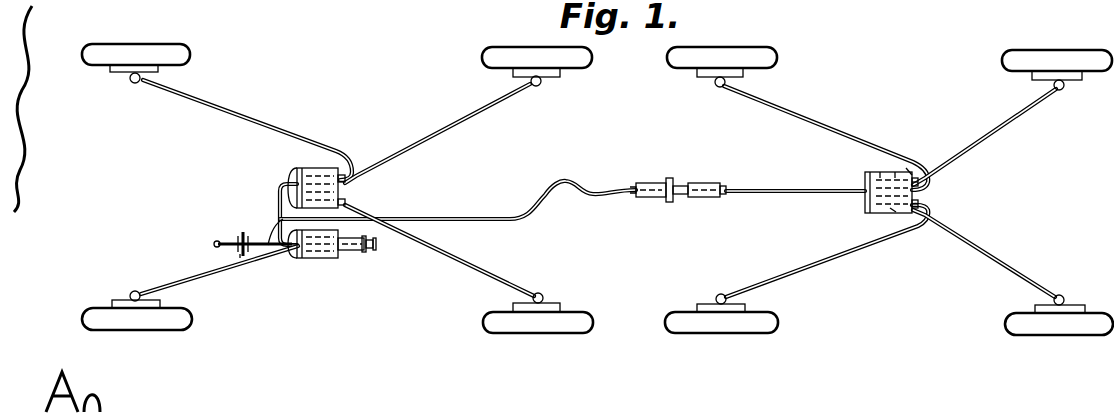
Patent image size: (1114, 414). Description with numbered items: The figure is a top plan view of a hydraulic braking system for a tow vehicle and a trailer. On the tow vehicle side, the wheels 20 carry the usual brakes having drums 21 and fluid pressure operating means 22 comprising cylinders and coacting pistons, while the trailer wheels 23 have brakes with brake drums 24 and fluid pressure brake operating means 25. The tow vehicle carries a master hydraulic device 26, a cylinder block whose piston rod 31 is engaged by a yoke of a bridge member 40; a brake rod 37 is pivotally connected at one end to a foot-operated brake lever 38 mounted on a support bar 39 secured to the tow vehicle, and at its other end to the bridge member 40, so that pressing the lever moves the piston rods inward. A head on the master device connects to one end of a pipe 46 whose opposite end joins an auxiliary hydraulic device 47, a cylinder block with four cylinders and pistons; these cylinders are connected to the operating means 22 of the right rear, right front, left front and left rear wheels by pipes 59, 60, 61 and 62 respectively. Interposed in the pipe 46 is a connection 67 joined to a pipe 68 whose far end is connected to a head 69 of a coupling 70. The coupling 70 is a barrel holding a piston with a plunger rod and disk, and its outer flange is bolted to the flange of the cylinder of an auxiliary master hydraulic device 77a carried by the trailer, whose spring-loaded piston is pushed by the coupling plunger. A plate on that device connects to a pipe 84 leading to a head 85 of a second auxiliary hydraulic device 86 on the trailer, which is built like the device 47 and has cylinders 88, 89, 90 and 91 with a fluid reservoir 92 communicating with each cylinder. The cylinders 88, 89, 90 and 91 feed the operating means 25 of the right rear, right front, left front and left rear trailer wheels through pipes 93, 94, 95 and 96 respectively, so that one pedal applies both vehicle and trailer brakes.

The wheels of tow vehicle 20 is at (161, 50).
The brake drums 21 is at (160, 70).
The fluid pressure operating means 22 is at (134, 84).
The trailer wheels 23 is at (719, 55).
The trailer brake drums 24 is at (744, 72).
The trailer fluid pressure brake operating means 25 is at (717, 88).
The master hydraulic device 26 is at (329, 267).
The piston rod 31 is at (358, 252).
The brake rod 37 is at (258, 240).
The brake lever 38 is at (242, 234).
The support bar 39 is at (240, 254).
The bridge member 40 is at (377, 247).
The pipe 46 is at (283, 196).
The auxiliary hydraulic device 47 is at (299, 165).
The pipe 59 is at (440, 132).
The pipe 60 is at (268, 125).
The pipe 61 is at (220, 272).
The pipe 62 is at (453, 260).
The connection 67 is at (268, 249).
The pipe 68 is at (432, 217).
The head 69 is at (636, 195).
The coupling 70 is at (655, 175).
The auxiliary master hydraulic device 77a is at (711, 175).
The pipe 84 is at (785, 194).
The head 85 is at (862, 180).
The second auxiliary hydraulic device 86 is at (895, 172).
The cylinder 88 is at (906, 168).
The cylinder 89 is at (918, 184).
The cylinder 90 is at (918, 201).
The cylinder 91 is at (894, 212).
The fluid reservoir 92 is at (880, 172).
The pipe 93 is at (1002, 130).
The pipe 94 is at (846, 132).
The pipe 95 is at (808, 268).
The pipe 96 is at (1003, 263).